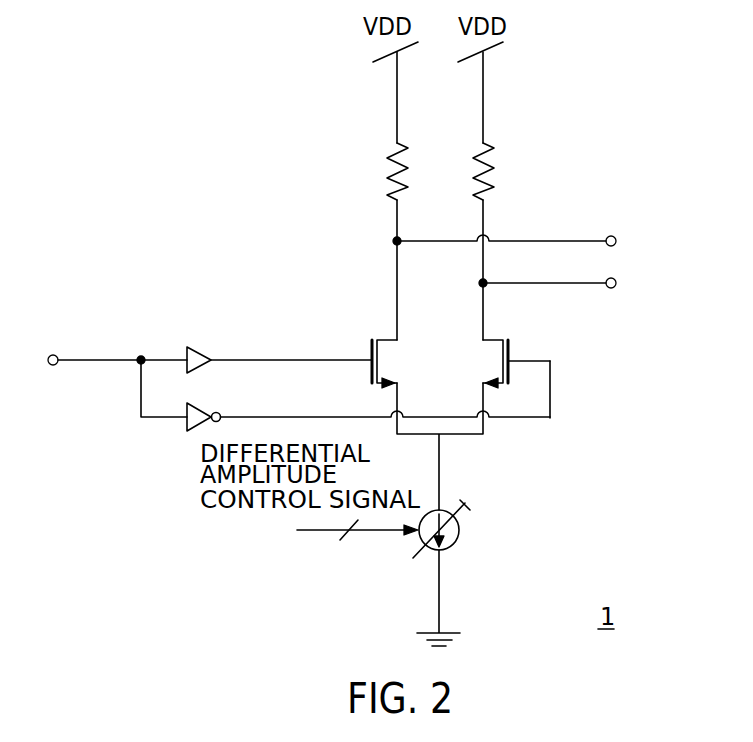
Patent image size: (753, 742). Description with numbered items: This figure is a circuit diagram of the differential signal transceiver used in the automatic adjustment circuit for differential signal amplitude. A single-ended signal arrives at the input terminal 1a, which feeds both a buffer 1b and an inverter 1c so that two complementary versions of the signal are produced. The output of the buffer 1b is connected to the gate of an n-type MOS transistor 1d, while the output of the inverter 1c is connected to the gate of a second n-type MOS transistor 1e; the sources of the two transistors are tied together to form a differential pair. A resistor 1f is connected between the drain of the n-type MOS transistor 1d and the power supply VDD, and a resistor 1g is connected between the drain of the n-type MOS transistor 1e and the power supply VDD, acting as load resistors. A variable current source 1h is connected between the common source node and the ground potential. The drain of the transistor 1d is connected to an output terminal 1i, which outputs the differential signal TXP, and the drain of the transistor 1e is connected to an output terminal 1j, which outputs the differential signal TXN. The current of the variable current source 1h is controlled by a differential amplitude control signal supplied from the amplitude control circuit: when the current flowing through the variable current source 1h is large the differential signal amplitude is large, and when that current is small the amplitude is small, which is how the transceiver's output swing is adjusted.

The input terminal 1a is at (55, 355).
The buffer 1b is at (197, 348).
The inverter 1c is at (186, 420).
The n-type MOS transistor 1d is at (370, 342).
The n-type MOS transistor 1e is at (511, 347).
The resistor 1f is at (390, 170).
The resistor 1g is at (492, 165).
The variable current source 1h is at (459, 531).
The output terminal 1i is at (611, 236).
The output terminal 1j is at (611, 288).